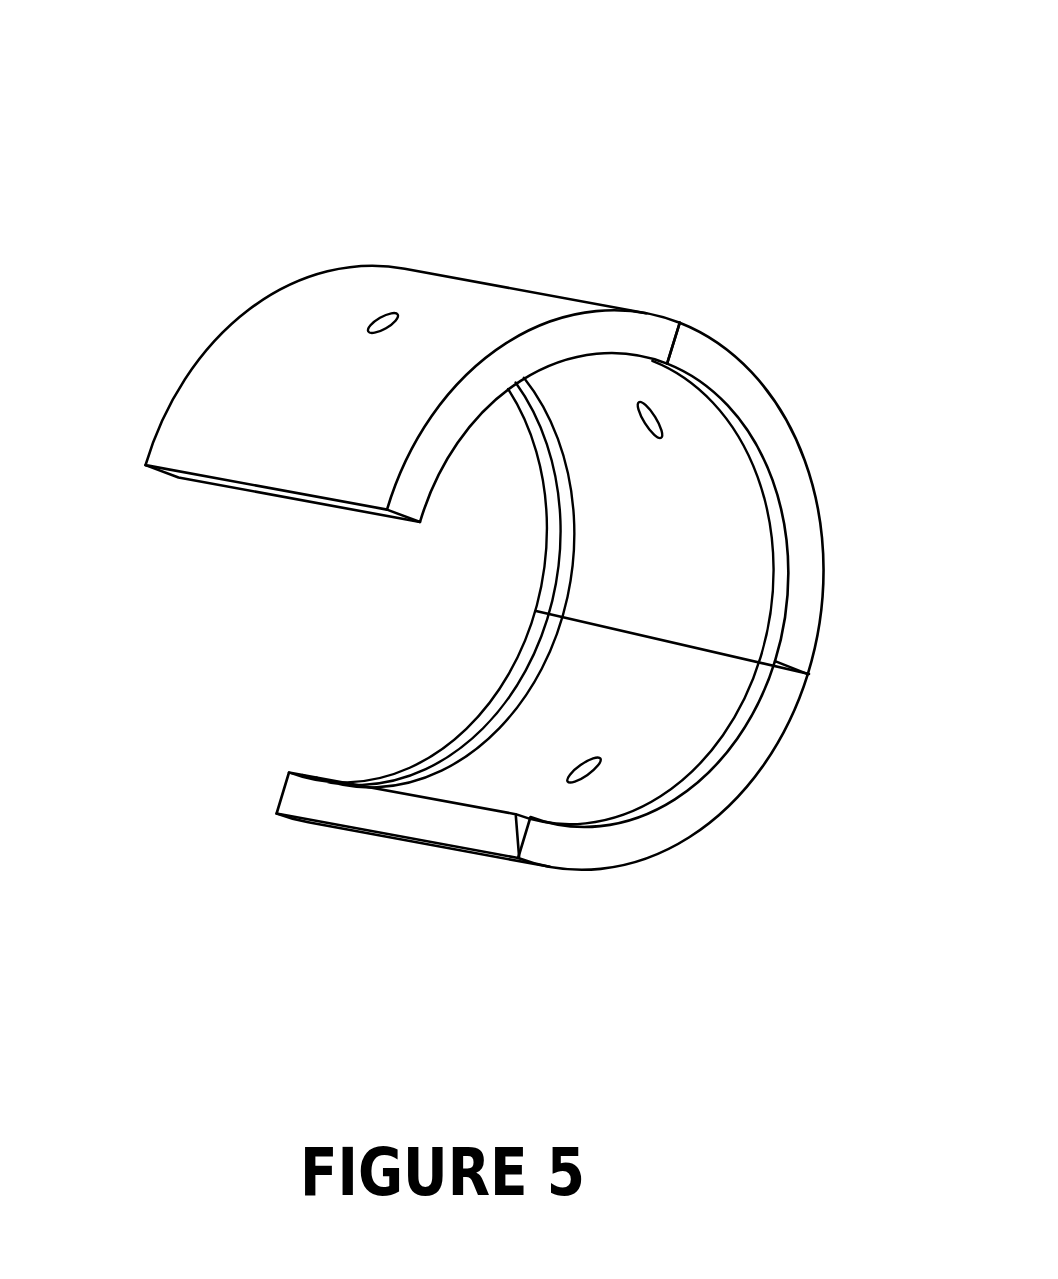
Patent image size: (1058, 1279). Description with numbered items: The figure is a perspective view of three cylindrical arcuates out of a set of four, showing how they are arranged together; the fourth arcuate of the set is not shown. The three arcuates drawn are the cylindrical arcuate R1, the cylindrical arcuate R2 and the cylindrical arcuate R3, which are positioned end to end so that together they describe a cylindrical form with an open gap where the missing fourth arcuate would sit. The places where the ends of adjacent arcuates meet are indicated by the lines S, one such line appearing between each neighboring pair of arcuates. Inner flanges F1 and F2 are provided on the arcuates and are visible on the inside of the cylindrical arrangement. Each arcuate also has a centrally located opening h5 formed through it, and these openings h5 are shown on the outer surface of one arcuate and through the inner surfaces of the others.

The cylindrical arcuate R1 is at (298, 393).
The cylindrical arcuate R2 is at (803, 455).
The cylindrical arcuate R3 is at (690, 820).
The lines indicating meeting of ends of arcuates S is at (678, 323).
The inner flange F1 is at (293, 772).
The inner flange F2 is at (750, 685).
The centrally located opening h5 is at (387, 317).